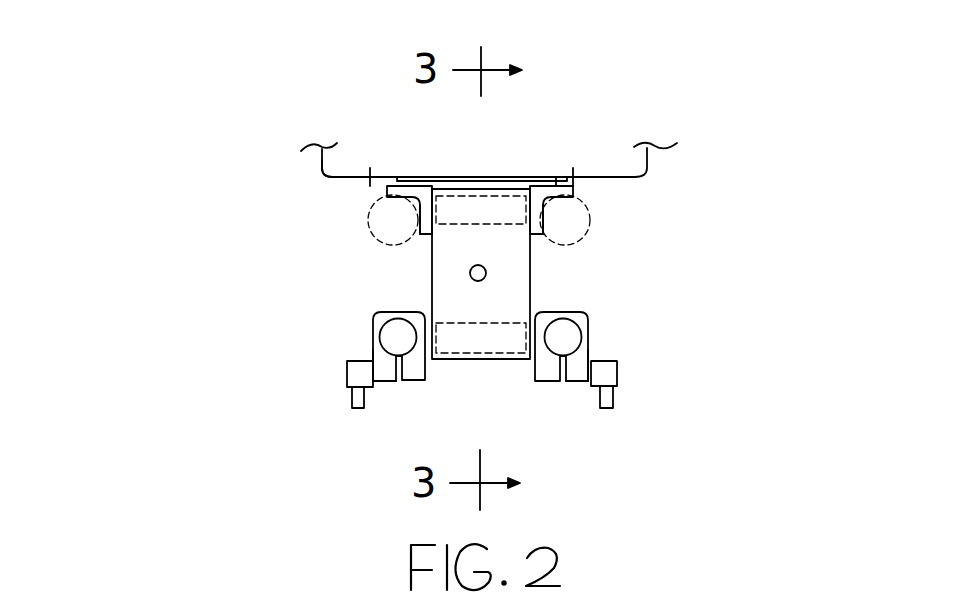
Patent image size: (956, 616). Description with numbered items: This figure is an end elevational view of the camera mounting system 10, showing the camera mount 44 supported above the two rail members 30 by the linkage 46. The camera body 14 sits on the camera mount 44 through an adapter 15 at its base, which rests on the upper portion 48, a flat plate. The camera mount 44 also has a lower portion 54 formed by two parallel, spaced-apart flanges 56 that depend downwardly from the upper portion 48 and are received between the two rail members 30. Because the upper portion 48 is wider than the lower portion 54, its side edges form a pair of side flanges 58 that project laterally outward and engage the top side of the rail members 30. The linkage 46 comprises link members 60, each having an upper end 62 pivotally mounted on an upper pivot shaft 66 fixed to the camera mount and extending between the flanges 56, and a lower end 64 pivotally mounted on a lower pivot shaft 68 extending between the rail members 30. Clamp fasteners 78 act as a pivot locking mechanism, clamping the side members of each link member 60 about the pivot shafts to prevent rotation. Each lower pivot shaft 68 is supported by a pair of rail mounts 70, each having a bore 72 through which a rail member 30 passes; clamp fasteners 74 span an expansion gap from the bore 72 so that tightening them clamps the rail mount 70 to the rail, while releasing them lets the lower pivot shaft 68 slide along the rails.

The camera mounting system 10 is at (114, 255).
The camera body 14 is at (657, 163).
The camera mount 44 is at (330, 192).
The upper portion 48 is at (421, 170).
The side flanges 58 is at (370, 176).
The adapter 15 is at (562, 181).
The rail members 30 is at (368, 212).
The flanges 56 is at (413, 220).
The lower portion 54 is at (414, 246).
The linkage 46 is at (650, 241).
The link members 60 is at (540, 293).
The upper pivot shaft 66 is at (467, 210).
The upper end 62 is at (488, 190).
The clamp fasteners 78 is at (470, 275).
The lower pivot shaft 68 is at (476, 360).
The lower end 64 is at (510, 360).
The bore 72 is at (373, 315).
The rail mounts 70 is at (373, 348).
The clamp fasteners 74 is at (347, 377).